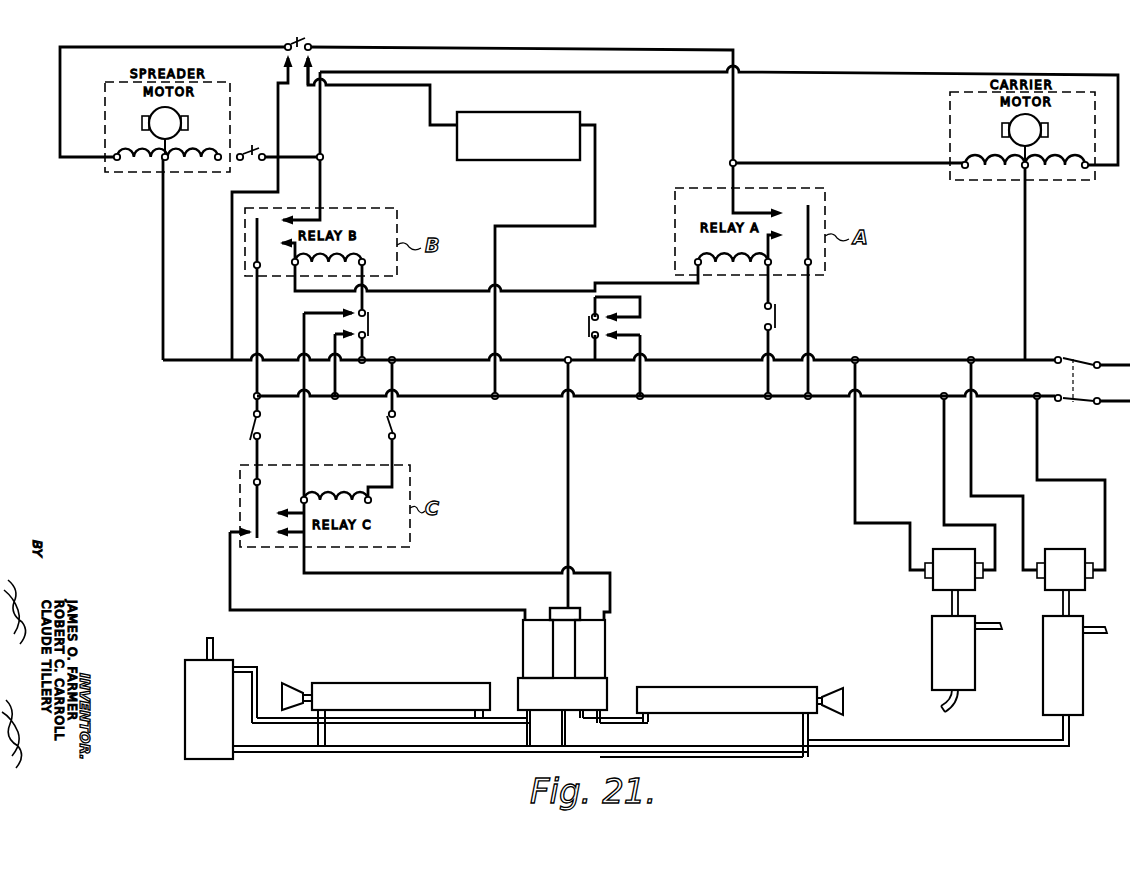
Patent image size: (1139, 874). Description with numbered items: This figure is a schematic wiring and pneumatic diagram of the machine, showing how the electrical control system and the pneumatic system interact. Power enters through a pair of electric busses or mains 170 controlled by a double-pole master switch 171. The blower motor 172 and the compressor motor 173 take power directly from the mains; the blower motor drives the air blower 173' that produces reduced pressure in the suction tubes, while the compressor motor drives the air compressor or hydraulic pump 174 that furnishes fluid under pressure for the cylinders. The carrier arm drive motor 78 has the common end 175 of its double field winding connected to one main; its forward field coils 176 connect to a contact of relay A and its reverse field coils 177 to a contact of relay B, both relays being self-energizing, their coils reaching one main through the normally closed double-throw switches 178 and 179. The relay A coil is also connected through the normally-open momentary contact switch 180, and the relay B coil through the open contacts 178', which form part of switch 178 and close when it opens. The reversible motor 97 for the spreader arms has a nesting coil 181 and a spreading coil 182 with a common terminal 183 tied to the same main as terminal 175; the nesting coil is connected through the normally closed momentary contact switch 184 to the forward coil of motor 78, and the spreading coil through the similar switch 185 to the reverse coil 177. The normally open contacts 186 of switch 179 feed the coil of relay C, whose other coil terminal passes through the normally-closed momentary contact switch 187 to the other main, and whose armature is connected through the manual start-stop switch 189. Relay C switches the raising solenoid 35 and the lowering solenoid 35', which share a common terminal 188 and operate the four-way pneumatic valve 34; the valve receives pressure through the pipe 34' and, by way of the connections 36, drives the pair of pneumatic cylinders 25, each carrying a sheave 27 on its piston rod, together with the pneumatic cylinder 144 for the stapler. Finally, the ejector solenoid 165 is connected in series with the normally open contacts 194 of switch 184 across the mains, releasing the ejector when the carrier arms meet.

The reversible motor 97 is at (158, 121).
The carrier arm drive motor 78 is at (1040, 128).
The nesting coil 181 is at (131, 162).
The spreading coil 182 is at (202, 162).
The common terminal 183 is at (161, 162).
The normally closed momentary contact switch 184 is at (301, 34).
The normally closed momentary contact switch 185 is at (253, 145).
The normally open contacts 194 is at (310, 58).
The solenoid 165 is at (558, 159).
The forward field coils 176 is at (960, 154).
The reverse field coils 177 is at (1066, 172).
The common end 175 is at (1020, 172).
The normally closed double-throw switch 179 is at (373, 324).
The normally open contacts 186 is at (350, 319).
The normally closed double-throw switch 178 is at (569, 328).
The open contacts 178' is at (638, 346).
The normally-open momentary contact switch 180 is at (779, 316).
The electric busses or mains 170 is at (694, 360).
The double-pole master switch 171 is at (1078, 404).
The manual start-stop switch 189 is at (250, 428).
The normally-closed momentary contact switch 187 is at (397, 430).
The common terminal 188 is at (578, 602).
The raising solenoid 35 is at (517, 649).
The lowering solenoid 35' is at (613, 649).
The four-way pneumatic valve 34 is at (588, 686).
The pipe 34' is at (938, 731).
The pneumatic cylinders 25 is at (408, 692).
The sheave 27 is at (282, 684).
The connections 36 is at (325, 739).
The pneumatic cylinder 144 is at (184, 682).
The blower motor 172 is at (967, 588).
The compressor motor 173 is at (1081, 582).
The air blower 173' is at (975, 664).
The air compressor or hydraulic pump 174 is at (1082, 668).